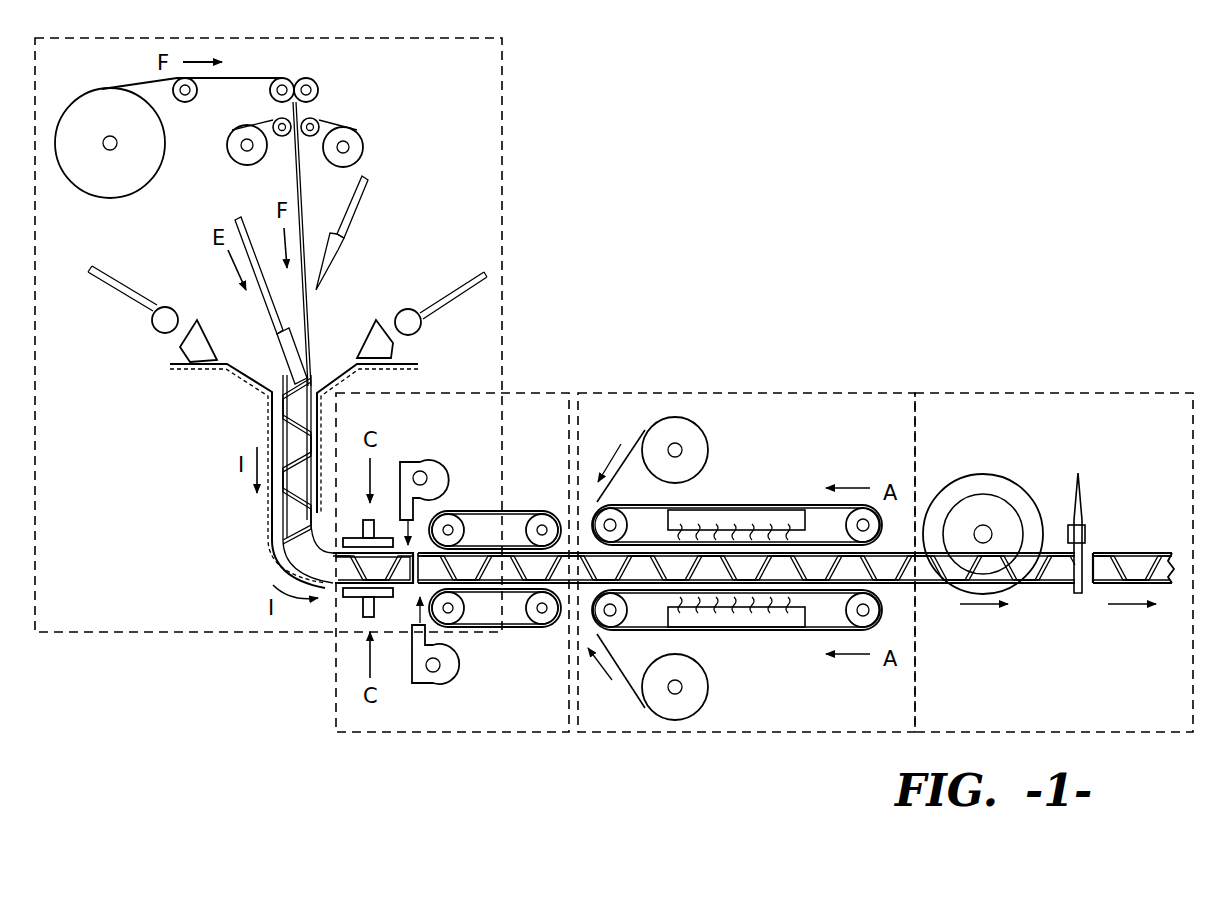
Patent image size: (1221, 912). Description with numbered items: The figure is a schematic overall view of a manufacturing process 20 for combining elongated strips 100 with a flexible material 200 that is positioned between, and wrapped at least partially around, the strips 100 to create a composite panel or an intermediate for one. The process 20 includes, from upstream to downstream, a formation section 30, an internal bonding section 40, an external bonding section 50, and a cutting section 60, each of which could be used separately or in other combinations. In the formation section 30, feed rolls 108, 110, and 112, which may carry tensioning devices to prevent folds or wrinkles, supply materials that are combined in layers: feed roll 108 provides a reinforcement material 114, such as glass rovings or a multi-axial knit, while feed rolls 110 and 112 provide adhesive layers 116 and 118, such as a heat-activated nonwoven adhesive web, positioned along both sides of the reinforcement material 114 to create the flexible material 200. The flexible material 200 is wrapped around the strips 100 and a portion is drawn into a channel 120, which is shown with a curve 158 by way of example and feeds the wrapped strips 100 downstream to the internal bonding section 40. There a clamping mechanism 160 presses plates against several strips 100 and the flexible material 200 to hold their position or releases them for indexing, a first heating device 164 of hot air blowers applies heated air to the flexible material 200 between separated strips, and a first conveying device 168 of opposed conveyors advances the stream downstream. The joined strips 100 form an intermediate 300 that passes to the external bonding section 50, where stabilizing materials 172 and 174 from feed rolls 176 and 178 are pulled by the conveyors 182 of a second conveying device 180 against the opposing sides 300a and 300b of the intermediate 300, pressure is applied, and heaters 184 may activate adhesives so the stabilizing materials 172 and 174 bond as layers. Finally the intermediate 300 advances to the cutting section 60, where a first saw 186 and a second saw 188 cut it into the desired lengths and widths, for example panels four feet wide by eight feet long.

The manufacturing process 20 is at (765, 211).
The formation section 30 is at (477, 157).
The internal bonding section 40 is at (519, 416).
The external bonding section 50 is at (820, 416).
The cutting section 60 is at (1001, 416).
The elongated strips 100 is at (197, 343).
The feed roll 108 is at (118, 187).
The feed roll 110 is at (243, 133).
The feed roll 112 is at (343, 132).
The reinforcement material 114 is at (262, 74).
The adhesive layer 116 is at (292, 167).
The adhesive layer 118 is at (285, 192).
The channel 120 is at (250, 410).
The curve 158 is at (266, 560).
The clamping mechanism 160 is at (386, 476).
The first heating device 164 is at (403, 688).
The first conveying device 168 is at (473, 496).
The stabilizing material 172 is at (612, 480).
The stabilizing material 174 is at (635, 692).
The feed roll 176 is at (675, 425).
The feed roll 178 is at (690, 702).
The second conveying device 180 is at (746, 430).
The conveyors 182 is at (725, 500).
The heaters 184 is at (778, 515).
The first saw 186 is at (978, 480).
The second saw 188 is at (1083, 505).
The flexible material 200 is at (320, 362).
The intermediate 300 is at (562, 631).
The side of intermediate 300a is at (572, 540).
The side of intermediate 300b is at (578, 624).